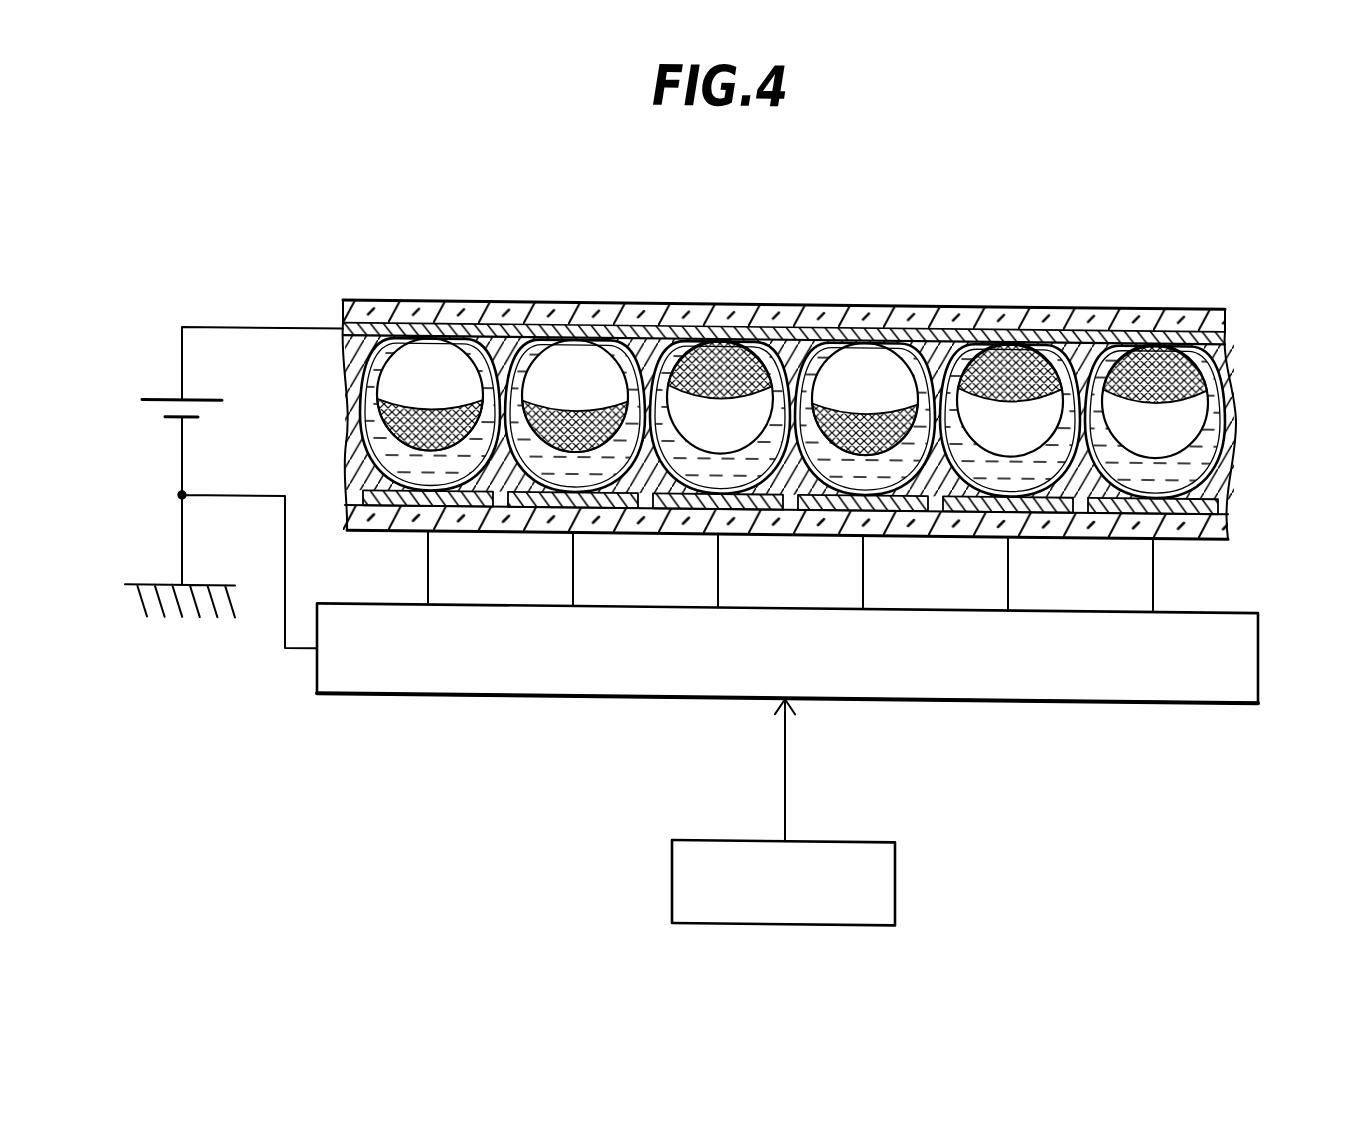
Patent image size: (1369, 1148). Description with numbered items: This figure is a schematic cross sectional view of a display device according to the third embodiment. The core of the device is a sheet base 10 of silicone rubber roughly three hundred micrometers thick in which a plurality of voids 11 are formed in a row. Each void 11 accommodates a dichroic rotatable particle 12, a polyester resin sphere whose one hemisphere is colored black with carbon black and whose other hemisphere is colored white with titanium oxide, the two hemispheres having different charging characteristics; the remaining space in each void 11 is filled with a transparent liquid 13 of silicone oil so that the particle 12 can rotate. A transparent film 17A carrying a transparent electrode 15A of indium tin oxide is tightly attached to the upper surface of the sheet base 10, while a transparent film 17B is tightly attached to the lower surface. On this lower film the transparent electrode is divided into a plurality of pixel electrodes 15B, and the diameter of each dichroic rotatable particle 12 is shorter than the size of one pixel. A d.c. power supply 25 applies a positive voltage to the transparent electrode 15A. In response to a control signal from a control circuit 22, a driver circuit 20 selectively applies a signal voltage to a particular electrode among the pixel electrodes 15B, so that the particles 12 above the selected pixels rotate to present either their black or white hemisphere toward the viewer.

The sheet base 10 is at (1232, 359).
The void 11 is at (1238, 389).
The dichroic rotatable particle 12 is at (1075, 409).
The transparent liquid 13 is at (1124, 326).
The transparent electrode 15A is at (1222, 327).
The pixel electrodes 15B is at (1210, 502).
The transparent film 17A is at (1207, 303).
The transparent film 17B is at (1232, 507).
The driver circuit 20 is at (1260, 644).
The control circuit 22 is at (897, 876).
The d.c. power supply 25 is at (142, 403).